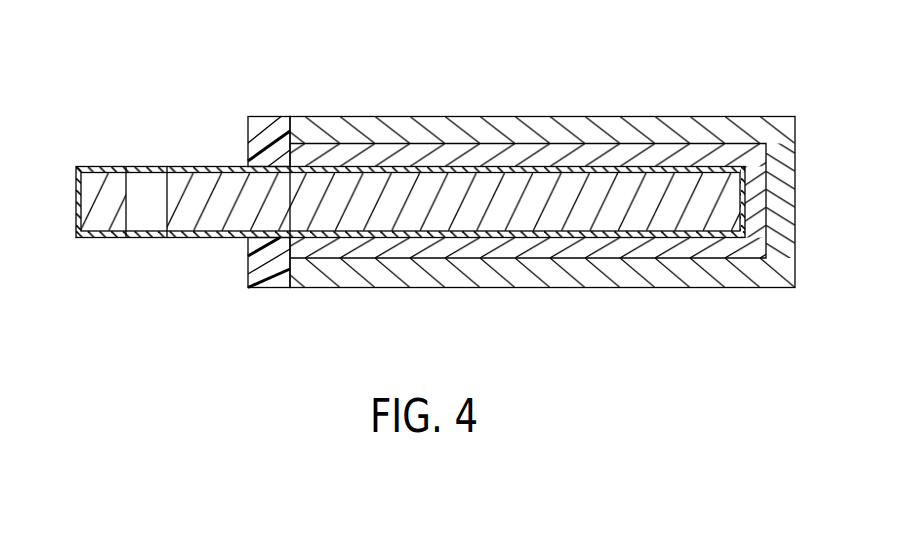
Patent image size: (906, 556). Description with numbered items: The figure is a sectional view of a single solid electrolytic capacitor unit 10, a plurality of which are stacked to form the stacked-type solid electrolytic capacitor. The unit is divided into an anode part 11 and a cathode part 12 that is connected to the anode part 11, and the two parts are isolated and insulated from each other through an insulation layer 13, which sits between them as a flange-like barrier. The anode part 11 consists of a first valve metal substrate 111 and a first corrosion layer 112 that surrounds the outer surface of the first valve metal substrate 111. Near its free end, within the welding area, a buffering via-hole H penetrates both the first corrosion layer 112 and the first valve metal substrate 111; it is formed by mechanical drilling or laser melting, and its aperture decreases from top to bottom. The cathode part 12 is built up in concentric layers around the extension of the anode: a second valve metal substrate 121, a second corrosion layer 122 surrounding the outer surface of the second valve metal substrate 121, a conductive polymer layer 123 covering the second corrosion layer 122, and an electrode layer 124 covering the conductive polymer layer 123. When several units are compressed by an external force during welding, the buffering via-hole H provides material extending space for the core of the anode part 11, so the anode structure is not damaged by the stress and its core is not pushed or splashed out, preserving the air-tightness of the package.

The solid electrolytic capacitor unit 10 is at (100, 40).
The anode part 11 is at (410, 204).
The buffering via-hole H is at (148, 187).
The first valve metal substrate 111 is at (217, 218).
The first corrosion layer 112 is at (185, 237).
The cathode part 12 is at (542, 192).
The second valve metal substrate 121 is at (528, 205).
The second corrosion layer 122 is at (465, 237).
The conductive polymer layer 123 is at (564, 157).
The electrode layer 124 is at (617, 132).
The insulation layer 13 is at (267, 111).